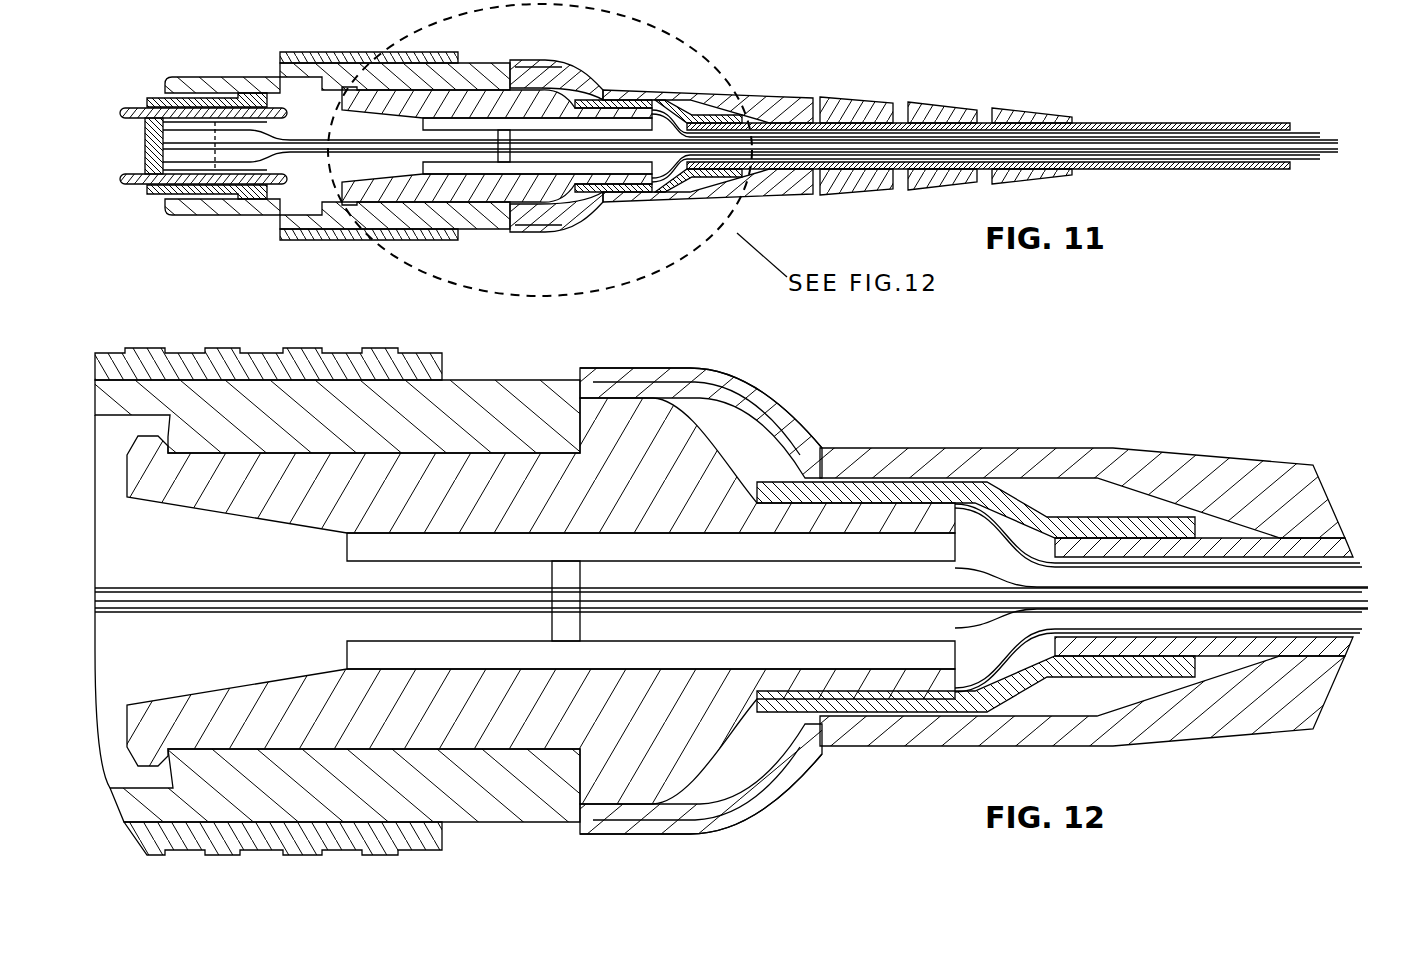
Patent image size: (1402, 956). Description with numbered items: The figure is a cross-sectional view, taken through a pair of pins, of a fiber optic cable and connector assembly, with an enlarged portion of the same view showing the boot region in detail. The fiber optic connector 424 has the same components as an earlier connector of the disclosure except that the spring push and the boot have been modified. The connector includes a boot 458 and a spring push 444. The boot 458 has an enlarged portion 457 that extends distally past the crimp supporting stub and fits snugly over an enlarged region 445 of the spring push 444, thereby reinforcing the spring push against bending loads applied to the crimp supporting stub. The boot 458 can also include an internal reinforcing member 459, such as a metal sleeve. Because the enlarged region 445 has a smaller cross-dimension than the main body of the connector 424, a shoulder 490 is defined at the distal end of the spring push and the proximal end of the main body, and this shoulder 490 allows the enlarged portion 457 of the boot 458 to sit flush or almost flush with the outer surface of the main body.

In FIG. 11, the fiber optic connector 424 is at (575, 47).
In FIG. 11, the spring push 444 is at (560, 93).
In FIG. 12, the spring push 444 is at (733, 448).
In FIG. 12, the enlarged region of the spring push 445 is at (613, 397).
In FIG. 12, the enlarged portion of the boot 457 is at (653, 367).
In FIG. 11, the boot 458 is at (657, 93).
In FIG. 12, the boot 458 is at (898, 446).
In FIG. 11, the internal reinforcing member 459 is at (532, 60).
In FIG. 12, the internal reinforcing member 459 is at (722, 388).
In FIG. 12, the shoulder 490 is at (580, 820).